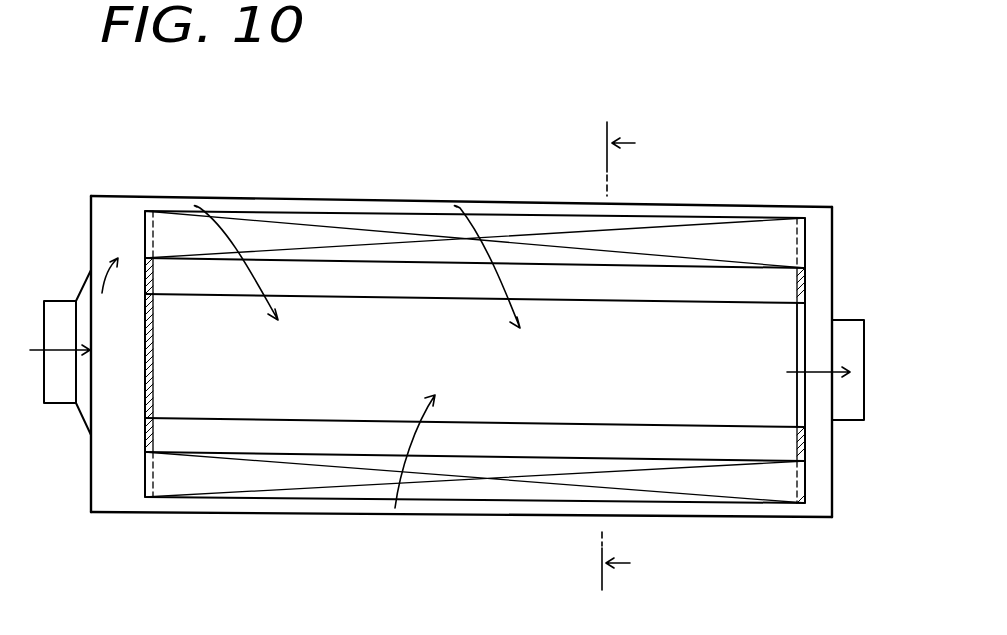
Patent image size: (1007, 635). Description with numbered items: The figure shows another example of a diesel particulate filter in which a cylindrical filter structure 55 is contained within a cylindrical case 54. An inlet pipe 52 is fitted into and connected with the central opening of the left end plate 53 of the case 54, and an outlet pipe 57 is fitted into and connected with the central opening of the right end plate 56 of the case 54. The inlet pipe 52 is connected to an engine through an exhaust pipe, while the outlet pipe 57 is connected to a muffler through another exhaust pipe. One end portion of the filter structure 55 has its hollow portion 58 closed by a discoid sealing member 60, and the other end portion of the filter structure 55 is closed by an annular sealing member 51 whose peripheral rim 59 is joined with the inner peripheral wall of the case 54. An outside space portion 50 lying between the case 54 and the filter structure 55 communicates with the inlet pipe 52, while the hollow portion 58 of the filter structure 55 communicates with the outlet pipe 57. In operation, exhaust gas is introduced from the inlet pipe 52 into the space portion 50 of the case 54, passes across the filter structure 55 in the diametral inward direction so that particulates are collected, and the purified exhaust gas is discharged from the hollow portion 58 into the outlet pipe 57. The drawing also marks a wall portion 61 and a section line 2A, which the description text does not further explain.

The outside space portion 50 is at (486, 509).
The annular sealing member 51 is at (142, 476).
The inlet pipe 52 is at (57, 388).
The left end plate 53 is at (91, 224).
The cylindrical case 54 is at (335, 198).
The cylindrical filter structure 55 is at (541, 226).
The right end plate 56 is at (833, 250).
The outlet pipe 57 is at (852, 320).
The hollow portion 58 is at (653, 383).
The peripheral rim 59 is at (800, 217).
The discoid sealing member 60 is at (153, 350).
The wall portion 61 is at (797, 404).
The section line 2A is at (637, 356).